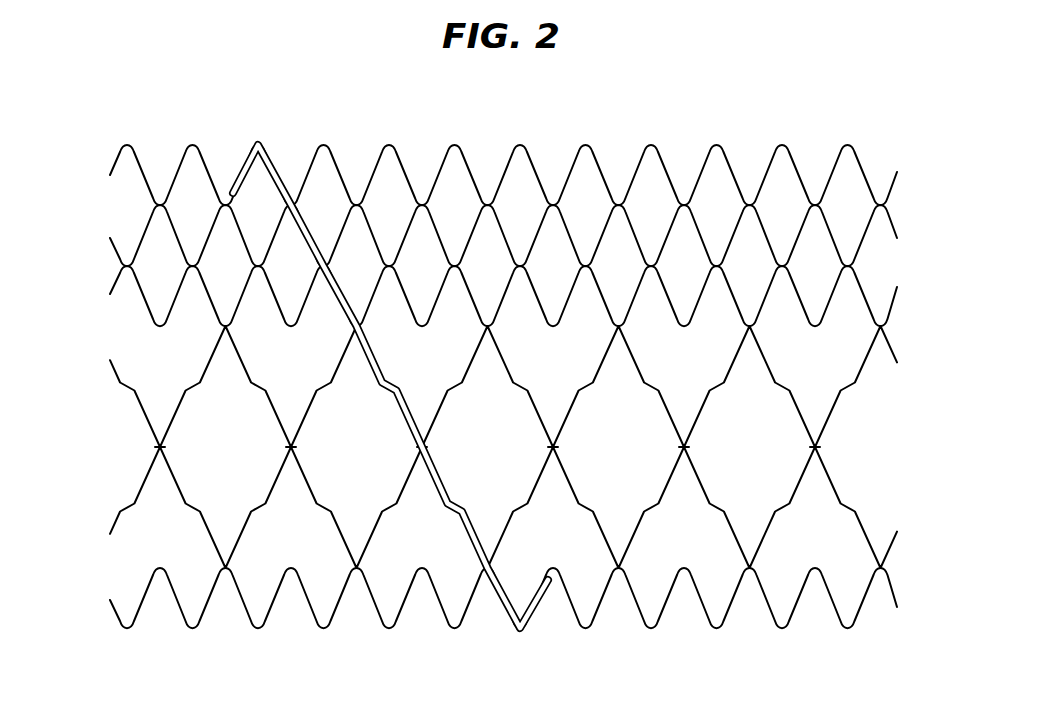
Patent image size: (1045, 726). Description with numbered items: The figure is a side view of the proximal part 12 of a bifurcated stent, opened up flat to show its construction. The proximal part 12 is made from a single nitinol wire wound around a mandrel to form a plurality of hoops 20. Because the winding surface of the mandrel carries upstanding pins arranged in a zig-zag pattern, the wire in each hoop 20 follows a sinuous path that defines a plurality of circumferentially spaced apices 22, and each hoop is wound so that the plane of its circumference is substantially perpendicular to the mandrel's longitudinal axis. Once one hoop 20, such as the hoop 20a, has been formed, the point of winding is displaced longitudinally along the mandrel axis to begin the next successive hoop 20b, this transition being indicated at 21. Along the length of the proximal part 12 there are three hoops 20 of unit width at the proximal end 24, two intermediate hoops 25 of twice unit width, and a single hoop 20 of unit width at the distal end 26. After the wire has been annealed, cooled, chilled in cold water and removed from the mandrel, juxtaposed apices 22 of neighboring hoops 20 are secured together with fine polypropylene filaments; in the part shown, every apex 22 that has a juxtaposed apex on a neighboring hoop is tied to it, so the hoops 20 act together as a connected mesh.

The proximal part 12 is at (78, 98).
The hoop 20 is at (885, 257).
The hoop 20a is at (135, 207).
The next successive hoop 20b is at (124, 294).
The longitudinal displacement of winding point 21 is at (325, 263).
The apex 22 is at (362, 205).
The proximal end 24 is at (625, 153).
The intermediate hoop 25 is at (863, 417).
The distal end 26 is at (420, 613).